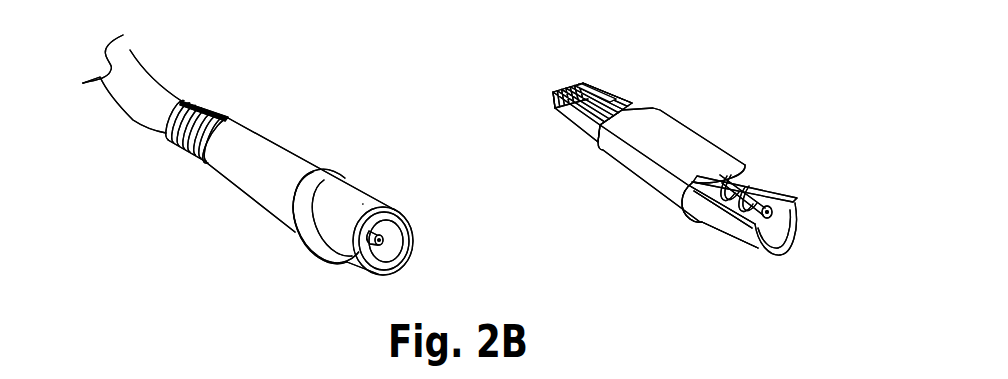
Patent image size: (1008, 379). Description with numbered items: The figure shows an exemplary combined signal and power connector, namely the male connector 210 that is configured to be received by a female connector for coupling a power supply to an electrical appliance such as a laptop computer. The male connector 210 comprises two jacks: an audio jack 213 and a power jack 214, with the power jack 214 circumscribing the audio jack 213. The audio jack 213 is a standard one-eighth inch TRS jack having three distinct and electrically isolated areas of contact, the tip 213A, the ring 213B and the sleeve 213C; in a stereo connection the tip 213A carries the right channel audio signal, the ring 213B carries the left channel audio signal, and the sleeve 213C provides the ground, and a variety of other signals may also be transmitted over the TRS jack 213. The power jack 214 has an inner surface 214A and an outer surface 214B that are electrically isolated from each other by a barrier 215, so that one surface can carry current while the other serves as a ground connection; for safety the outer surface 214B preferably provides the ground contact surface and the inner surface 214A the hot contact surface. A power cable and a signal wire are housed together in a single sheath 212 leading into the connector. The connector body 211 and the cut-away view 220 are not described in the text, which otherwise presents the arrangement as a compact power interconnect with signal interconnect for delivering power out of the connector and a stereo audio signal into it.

The male connector 210 is at (262, 57).
The body 211 is at (253, 193).
The sheath 212 is at (142, 110).
The audio jack 213 is at (381, 242).
The tip 213A is at (775, 208).
The ring 213B is at (776, 187).
The sleeve 213C is at (727, 186).
The power jack 214 is at (337, 237).
The inner surface 214A is at (741, 251).
The outer surface 214B is at (725, 216).
The barrier 215 is at (408, 231).
The connector 220 is at (742, 64).